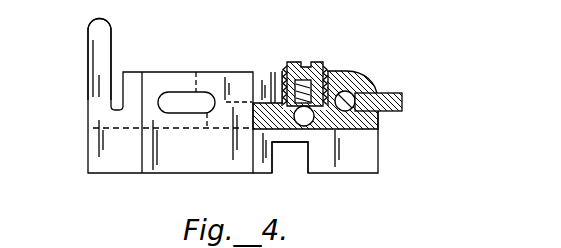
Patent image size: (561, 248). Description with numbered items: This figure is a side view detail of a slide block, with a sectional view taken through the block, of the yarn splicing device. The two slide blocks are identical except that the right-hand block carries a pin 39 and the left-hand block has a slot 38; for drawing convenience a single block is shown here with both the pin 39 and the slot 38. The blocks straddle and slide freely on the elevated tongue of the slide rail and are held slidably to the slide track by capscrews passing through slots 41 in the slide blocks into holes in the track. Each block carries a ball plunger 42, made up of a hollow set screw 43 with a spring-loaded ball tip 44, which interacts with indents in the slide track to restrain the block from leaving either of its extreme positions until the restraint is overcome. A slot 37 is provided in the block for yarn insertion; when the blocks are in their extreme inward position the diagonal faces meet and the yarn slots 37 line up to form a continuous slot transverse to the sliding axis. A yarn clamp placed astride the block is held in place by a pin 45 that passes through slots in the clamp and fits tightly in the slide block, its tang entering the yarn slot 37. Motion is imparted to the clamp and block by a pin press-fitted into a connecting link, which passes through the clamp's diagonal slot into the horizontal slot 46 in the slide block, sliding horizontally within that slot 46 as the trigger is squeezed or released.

The yarn slot 37 is at (113, 82).
The slot 38 is at (288, 160).
The pin 39 is at (403, 103).
The slots 41 is at (268, 78).
The ball plunger 42 is at (318, 63).
The hollow set screw 43 is at (352, 78).
The spring-loaded ball tip 44 is at (307, 128).
The pin 45 is at (378, 92).
The horizontal slot 46 is at (180, 100).